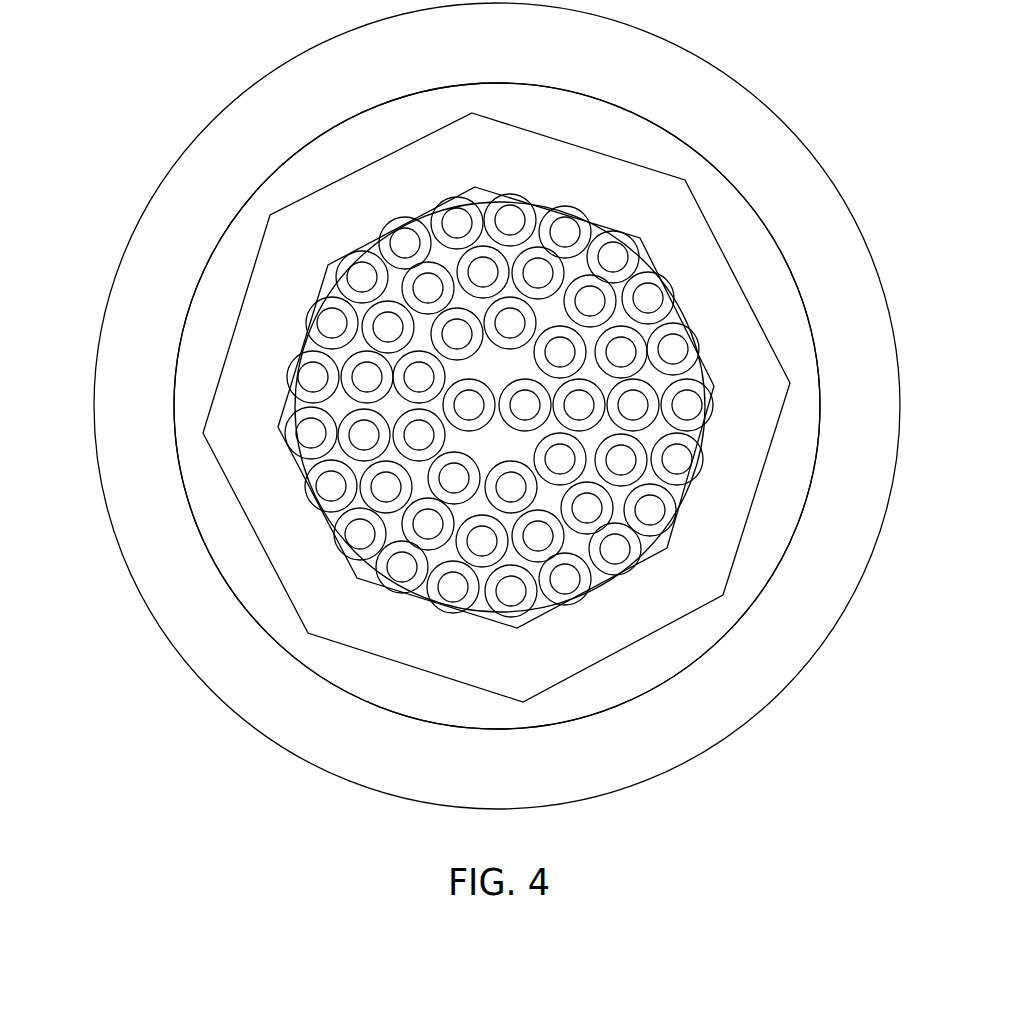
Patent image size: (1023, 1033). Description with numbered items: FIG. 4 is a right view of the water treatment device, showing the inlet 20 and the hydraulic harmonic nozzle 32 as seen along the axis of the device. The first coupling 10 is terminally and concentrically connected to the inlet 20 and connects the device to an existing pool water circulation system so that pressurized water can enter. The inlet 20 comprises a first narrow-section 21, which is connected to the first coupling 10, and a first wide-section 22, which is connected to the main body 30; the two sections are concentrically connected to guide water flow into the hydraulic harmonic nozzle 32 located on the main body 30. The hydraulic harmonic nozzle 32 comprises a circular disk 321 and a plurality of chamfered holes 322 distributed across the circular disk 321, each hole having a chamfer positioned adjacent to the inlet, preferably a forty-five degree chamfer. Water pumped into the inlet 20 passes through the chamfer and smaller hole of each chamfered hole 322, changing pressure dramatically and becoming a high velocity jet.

The first coupling 10 is at (735, 477).
The inlet 20 is at (757, 178).
The first narrow-section 21 is at (627, 247).
The first wide-section 22 is at (220, 297).
The main body 30 is at (910, 296).
The hydraulic harmonic nozzle 32 is at (481, 380).
The circular disk 321 is at (335, 360).
The chamfered holes 322 is at (362, 277).